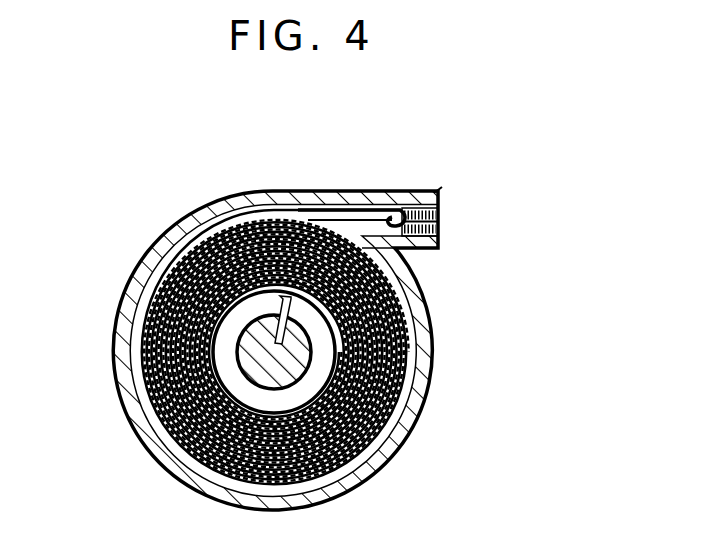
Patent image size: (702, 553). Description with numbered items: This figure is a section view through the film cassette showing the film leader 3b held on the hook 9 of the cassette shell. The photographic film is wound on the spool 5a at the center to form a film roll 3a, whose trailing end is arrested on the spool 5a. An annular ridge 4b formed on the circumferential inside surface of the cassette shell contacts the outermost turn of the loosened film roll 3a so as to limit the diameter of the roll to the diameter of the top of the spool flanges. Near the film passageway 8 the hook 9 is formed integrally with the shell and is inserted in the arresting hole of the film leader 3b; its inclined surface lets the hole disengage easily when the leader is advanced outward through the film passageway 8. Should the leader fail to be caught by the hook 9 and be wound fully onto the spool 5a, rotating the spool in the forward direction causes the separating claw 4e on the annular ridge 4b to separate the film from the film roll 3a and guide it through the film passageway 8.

The film roll 3a is at (168, 262).
The film leader 3b is at (347, 212).
The annular ridge 4b is at (405, 343).
The separating claw 4e is at (358, 240).
The spool 5a is at (298, 358).
The film passageway 8 is at (431, 213).
The hook 9 is at (432, 182).